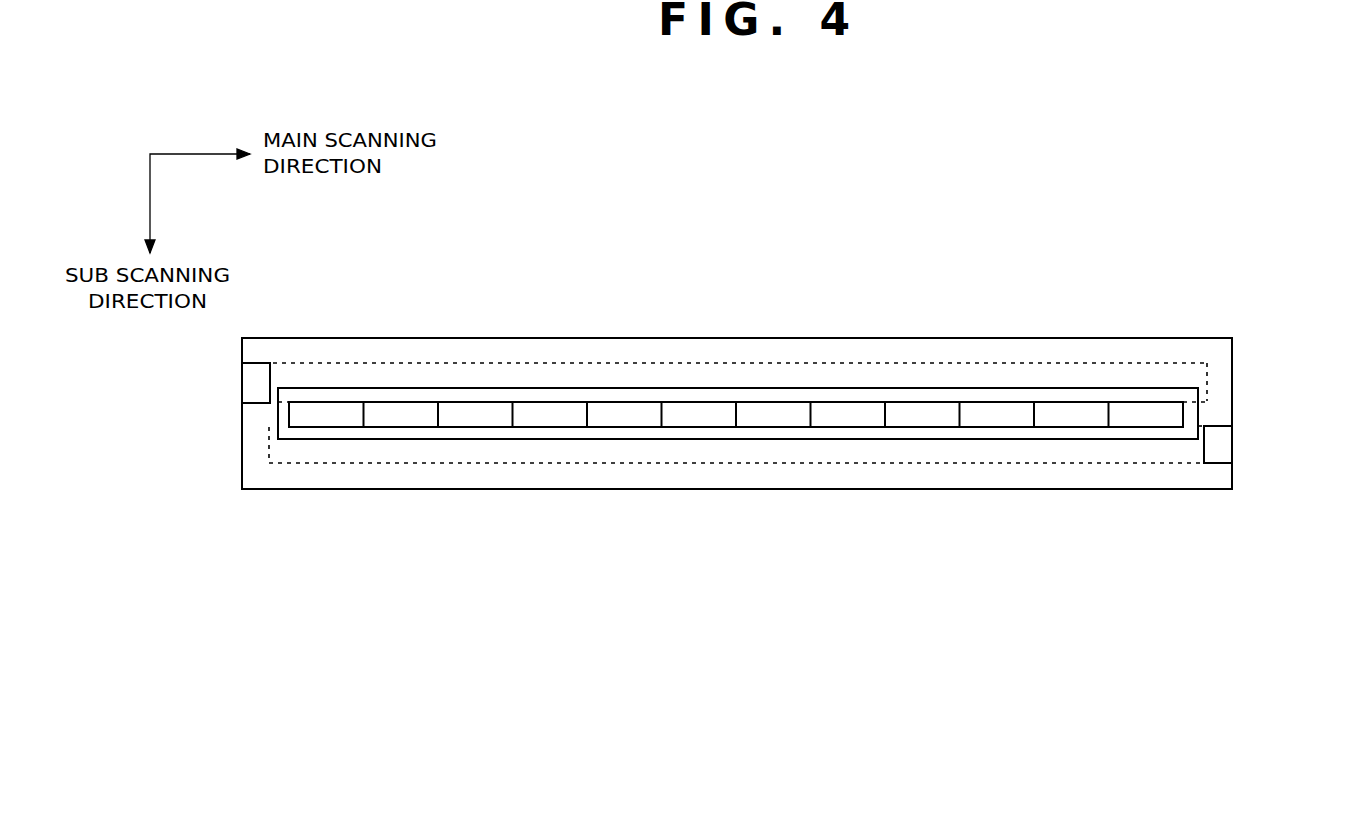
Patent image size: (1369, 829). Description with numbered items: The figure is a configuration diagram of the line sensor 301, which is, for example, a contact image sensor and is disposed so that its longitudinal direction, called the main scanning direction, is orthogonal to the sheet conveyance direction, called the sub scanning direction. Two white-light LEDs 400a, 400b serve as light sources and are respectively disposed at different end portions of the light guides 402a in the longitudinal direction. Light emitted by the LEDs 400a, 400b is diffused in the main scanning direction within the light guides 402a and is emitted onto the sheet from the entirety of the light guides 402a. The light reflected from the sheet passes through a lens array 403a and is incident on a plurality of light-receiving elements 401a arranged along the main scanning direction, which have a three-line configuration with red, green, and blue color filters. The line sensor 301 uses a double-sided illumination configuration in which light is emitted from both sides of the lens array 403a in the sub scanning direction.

The line sensor 301 is at (1207, 338).
The LED 400a is at (261, 362).
The LED 400b is at (1233, 442).
The light-receiving elements 401a is at (341, 407).
The light guides 402a is at (860, 462).
The lens array 403a is at (995, 388).